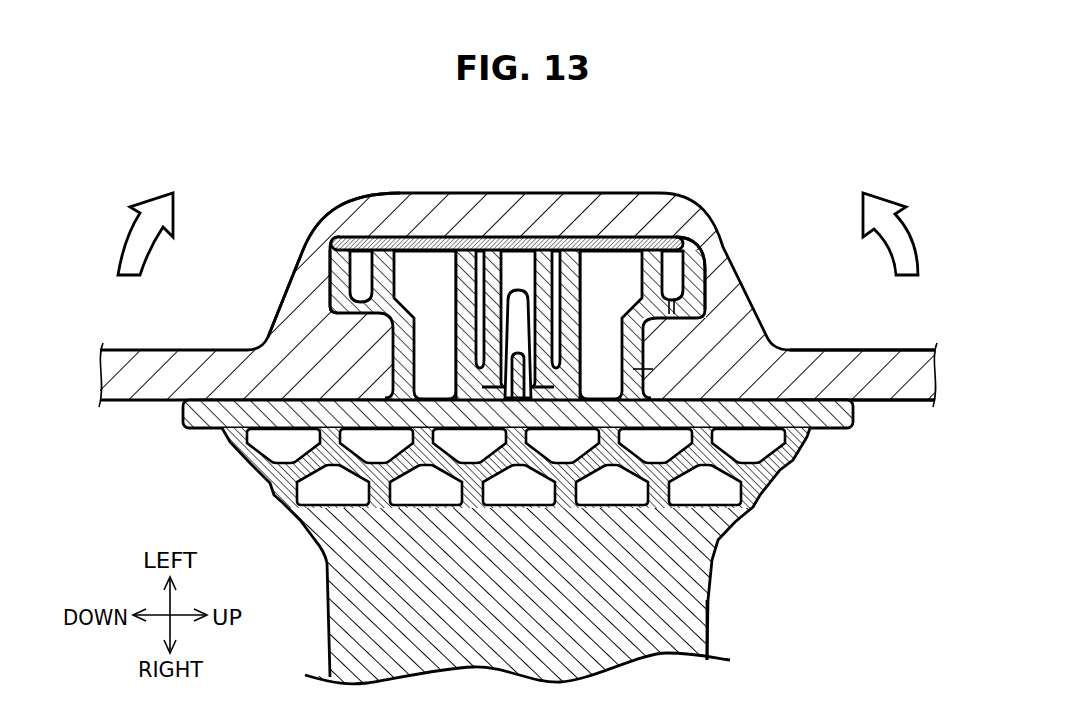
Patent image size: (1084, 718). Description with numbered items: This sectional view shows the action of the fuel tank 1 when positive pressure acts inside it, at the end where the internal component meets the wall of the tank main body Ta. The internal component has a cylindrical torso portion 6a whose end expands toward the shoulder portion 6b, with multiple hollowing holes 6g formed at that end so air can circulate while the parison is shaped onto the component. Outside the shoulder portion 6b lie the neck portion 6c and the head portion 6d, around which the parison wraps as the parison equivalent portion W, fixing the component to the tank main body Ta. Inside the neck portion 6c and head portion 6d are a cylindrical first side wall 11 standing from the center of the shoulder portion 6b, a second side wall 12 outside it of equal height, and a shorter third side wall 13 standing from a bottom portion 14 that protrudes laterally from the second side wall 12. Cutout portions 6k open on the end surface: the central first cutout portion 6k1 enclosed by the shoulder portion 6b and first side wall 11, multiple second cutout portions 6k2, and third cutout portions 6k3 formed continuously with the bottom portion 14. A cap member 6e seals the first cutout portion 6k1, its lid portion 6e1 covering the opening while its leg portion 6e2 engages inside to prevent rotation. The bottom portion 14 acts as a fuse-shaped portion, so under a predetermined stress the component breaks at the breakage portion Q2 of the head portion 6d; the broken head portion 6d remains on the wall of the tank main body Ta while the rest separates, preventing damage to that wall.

The fuel tank 1 is at (824, 581).
The torso portion 6a is at (680, 573).
The shoulder portion 6b is at (192, 416).
The neck portion 6c is at (390, 362).
The head portion 6d is at (331, 279).
The cap member 6e is at (400, 235).
The lid portion 6e1 is at (383, 247).
The leg portion 6e2 is at (601, 273).
The hollowing holes 6g is at (722, 492).
The cutout portion 6k is at (533, 257).
The first cutout portion 6k1 is at (483, 249).
The second cutout portion 6k2 is at (638, 238).
The third cutout portion 6k3 is at (682, 244).
The first side wall 11 is at (603, 250).
The second side wall 12 is at (615, 252).
The third side wall 13 is at (695, 282).
The bottom portion 14 is at (704, 260).
The breakage portion Q2 is at (645, 368).
The tank main body Ta is at (898, 393).
The parison equivalent portion W is at (296, 231).